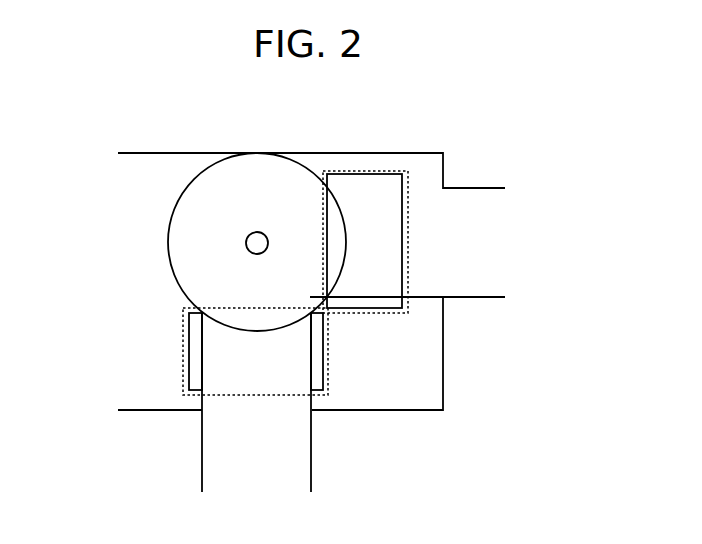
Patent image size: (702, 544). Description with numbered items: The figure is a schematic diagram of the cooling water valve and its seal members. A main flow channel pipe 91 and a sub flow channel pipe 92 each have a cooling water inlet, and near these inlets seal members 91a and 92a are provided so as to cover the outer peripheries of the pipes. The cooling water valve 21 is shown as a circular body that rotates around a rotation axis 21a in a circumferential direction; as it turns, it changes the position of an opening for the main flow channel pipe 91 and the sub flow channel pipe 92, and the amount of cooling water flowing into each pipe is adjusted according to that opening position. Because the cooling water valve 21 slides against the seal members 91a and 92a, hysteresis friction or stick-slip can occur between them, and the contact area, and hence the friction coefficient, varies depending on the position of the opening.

The cooling water valve 21 is at (171, 272).
The rotation axis 21a is at (246, 244).
The main flow channel pipe 91 is at (202, 441).
The seal member 91a is at (257, 395).
The sub flow channel pipe 92 is at (474, 297).
The seal member 92a is at (366, 314).